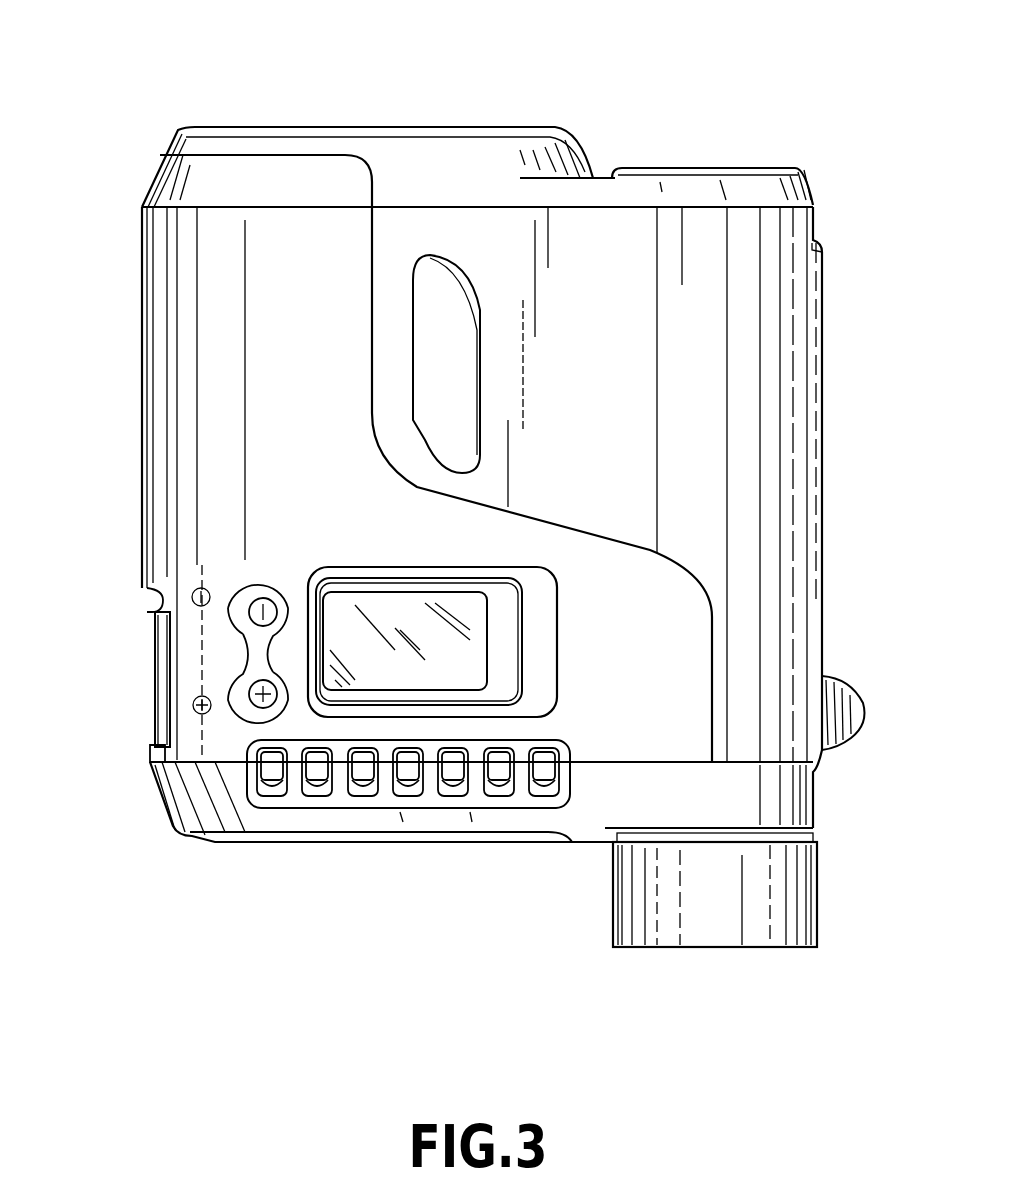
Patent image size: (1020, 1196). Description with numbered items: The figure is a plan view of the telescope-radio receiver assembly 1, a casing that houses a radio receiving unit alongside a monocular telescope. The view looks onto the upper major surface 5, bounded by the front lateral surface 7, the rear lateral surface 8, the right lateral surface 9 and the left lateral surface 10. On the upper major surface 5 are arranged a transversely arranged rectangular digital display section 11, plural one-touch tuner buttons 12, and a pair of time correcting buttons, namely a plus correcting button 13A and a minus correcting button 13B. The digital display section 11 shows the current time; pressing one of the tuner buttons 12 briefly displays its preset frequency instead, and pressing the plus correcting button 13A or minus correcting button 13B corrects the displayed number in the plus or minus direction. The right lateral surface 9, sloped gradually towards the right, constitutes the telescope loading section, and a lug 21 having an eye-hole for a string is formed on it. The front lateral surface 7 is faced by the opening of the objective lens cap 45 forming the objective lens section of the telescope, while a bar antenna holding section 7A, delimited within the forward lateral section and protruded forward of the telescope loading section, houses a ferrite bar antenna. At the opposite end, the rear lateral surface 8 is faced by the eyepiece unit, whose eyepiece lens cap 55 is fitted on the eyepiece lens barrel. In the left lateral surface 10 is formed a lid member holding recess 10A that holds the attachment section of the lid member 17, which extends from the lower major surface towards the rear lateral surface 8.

The telescope-radio receiver assembly 1 is at (140, 517).
The upper major surface 5 is at (205, 330).
The front lateral surface 7 is at (437, 133).
The bar antenna holding section 7A is at (493, 187).
The rear lateral surface 8 is at (300, 842).
The right lateral surface 9 is at (821, 487).
The left lateral surface 10 is at (145, 427).
The lid member holding recess 10A is at (148, 590).
The digital display section 11 is at (382, 613).
The one-touch tuner buttons 12 is at (575, 720).
The plus correcting button 13A is at (236, 680).
The minus correcting button 13B is at (232, 612).
The lid member 17 is at (155, 660).
The lug 21 is at (848, 700).
The objective lens cap 45 is at (715, 166).
The eyepiece lens cap 55 is at (795, 890).